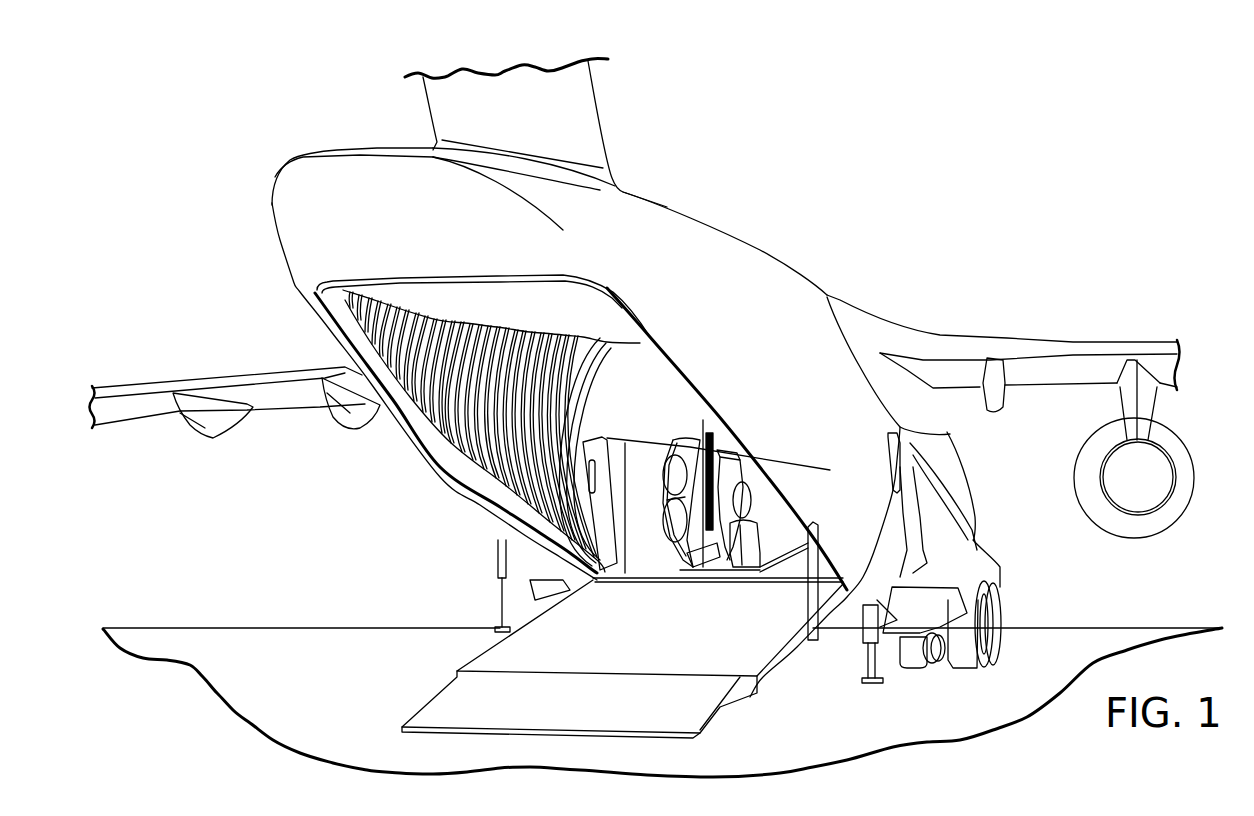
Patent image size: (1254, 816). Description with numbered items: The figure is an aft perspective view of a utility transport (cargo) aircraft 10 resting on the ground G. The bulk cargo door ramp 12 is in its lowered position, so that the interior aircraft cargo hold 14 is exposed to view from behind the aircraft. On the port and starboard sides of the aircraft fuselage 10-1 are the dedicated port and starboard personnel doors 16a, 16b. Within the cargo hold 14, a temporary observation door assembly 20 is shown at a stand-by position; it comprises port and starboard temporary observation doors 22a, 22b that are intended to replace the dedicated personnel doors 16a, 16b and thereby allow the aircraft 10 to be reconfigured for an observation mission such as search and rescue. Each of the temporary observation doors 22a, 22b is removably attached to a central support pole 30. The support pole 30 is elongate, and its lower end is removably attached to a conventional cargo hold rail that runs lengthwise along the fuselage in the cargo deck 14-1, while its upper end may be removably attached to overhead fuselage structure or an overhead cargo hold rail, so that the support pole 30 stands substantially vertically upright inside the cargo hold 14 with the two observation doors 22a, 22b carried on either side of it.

The utility transport aircraft 10 is at (912, 220).
The aircraft fuselage 10-1 is at (828, 415).
The bulk cargo door ramp 12 is at (693, 651).
The interior aircraft cargo hold 14 is at (462, 350).
The cargo deck 14-1 is at (793, 567).
The port personnel door 16a is at (590, 443).
The starboard personnel door 16b is at (920, 472).
The temporary observation door assembly 20 is at (685, 425).
The port temporary observation door 22a is at (668, 518).
The starboard temporary observation door 22b is at (750, 556).
The central support pole 30 is at (707, 433).
The ground G is at (363, 696).